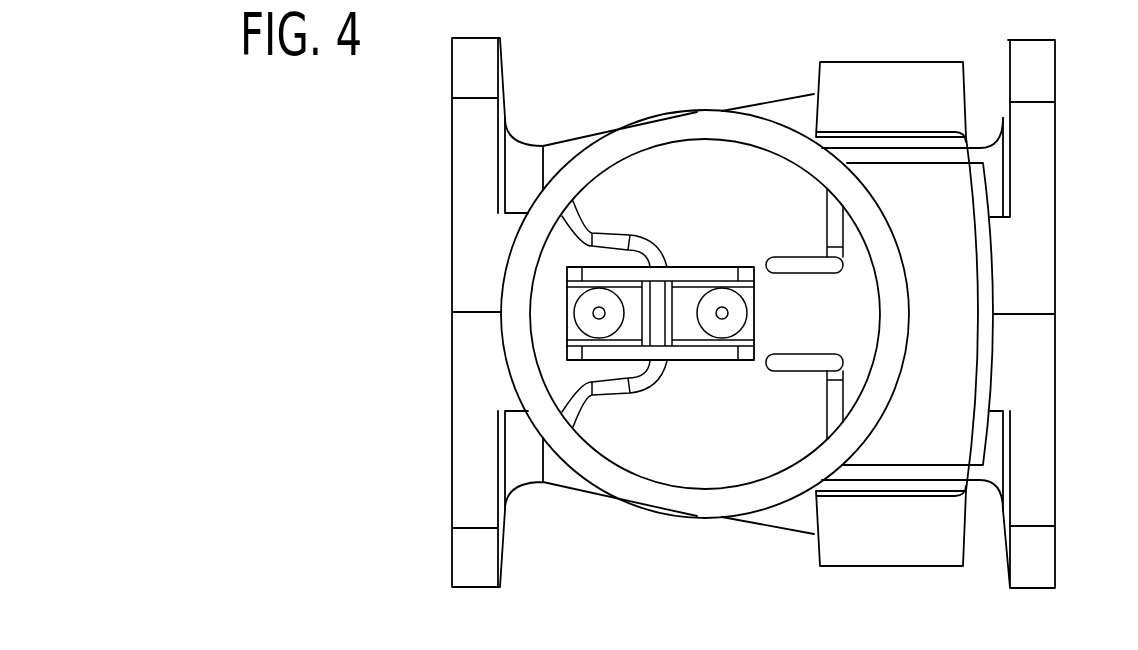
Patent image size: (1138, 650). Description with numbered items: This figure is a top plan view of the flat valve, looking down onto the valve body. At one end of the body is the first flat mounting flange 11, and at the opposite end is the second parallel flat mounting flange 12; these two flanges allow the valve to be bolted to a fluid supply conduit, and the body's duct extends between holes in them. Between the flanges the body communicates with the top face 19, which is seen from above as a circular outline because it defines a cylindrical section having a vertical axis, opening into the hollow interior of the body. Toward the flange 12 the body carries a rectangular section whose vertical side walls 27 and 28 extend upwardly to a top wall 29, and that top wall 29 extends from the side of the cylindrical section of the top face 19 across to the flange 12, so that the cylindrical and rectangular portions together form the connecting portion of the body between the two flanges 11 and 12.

The first flat mounting flange 11 is at (458, 66).
The second parallel flat mounting flange 12 is at (1047, 83).
The top face 19 is at (725, 220).
The vertical side wall 27 is at (933, 137).
The vertical side wall 28 is at (938, 470).
The top wall 29 is at (960, 290).